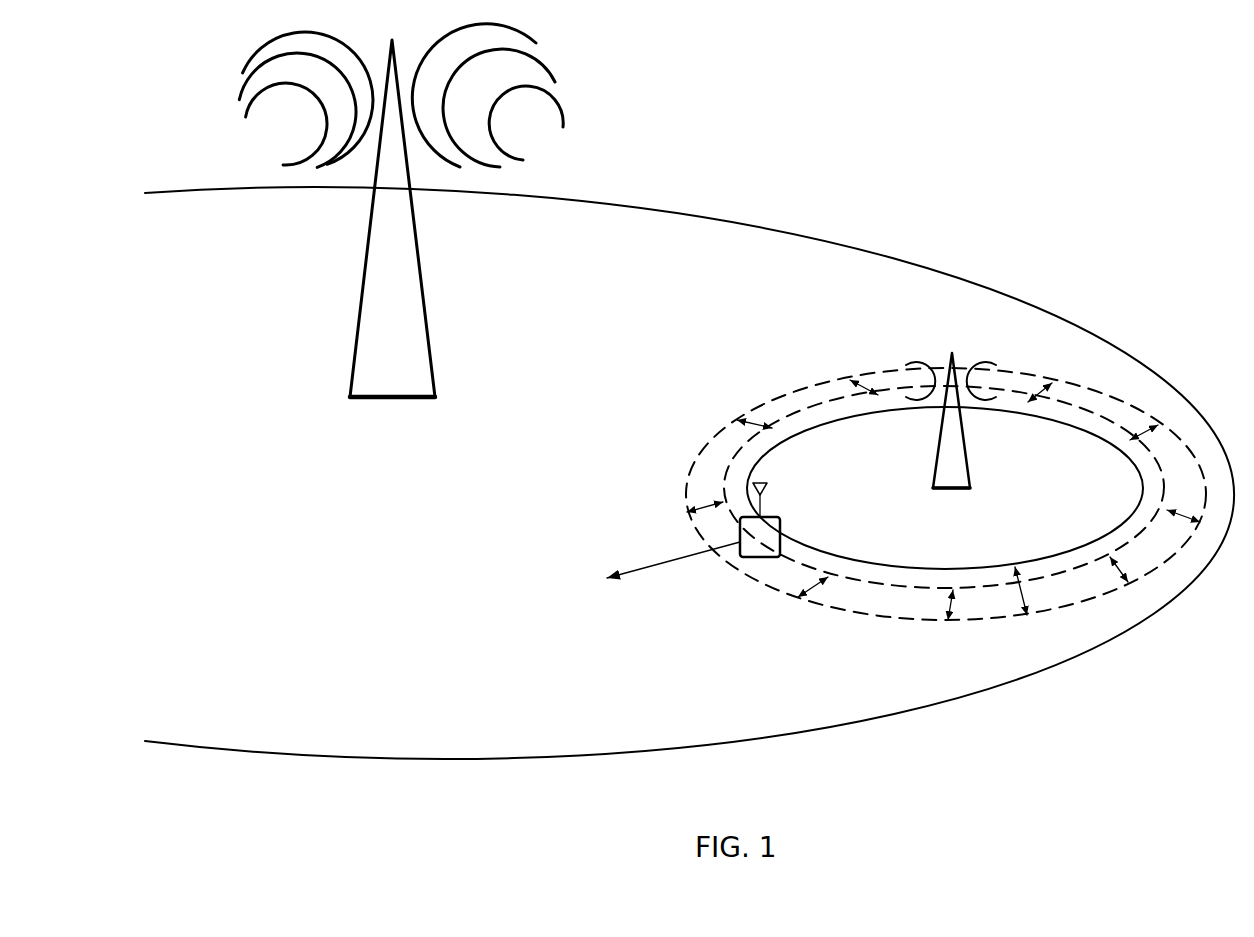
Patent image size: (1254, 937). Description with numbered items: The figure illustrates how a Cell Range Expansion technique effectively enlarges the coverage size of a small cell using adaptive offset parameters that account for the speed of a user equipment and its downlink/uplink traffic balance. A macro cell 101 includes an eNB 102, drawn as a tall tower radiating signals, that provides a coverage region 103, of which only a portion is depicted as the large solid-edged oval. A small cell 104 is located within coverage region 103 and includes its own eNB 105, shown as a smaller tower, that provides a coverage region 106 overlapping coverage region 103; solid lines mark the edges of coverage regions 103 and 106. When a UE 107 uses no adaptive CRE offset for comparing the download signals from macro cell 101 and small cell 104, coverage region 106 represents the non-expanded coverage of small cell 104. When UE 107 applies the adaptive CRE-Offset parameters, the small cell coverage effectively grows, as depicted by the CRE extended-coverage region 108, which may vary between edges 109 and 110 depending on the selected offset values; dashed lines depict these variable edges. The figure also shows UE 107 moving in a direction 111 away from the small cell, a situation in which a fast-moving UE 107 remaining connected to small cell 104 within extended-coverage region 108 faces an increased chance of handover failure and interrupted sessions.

The macro cell 101 is at (401, 244).
The eNB 102 is at (387, 312).
The coverage region 103 is at (437, 760).
The small cell 104 is at (950, 435).
The eNB 105 is at (952, 455).
The coverage region 106 is at (877, 567).
The UE 107 is at (745, 557).
The CRE extended-coverage region 108 is at (1018, 593).
The edge 109 is at (687, 480).
The edge 110 is at (733, 463).
The direction 111 is at (676, 559).